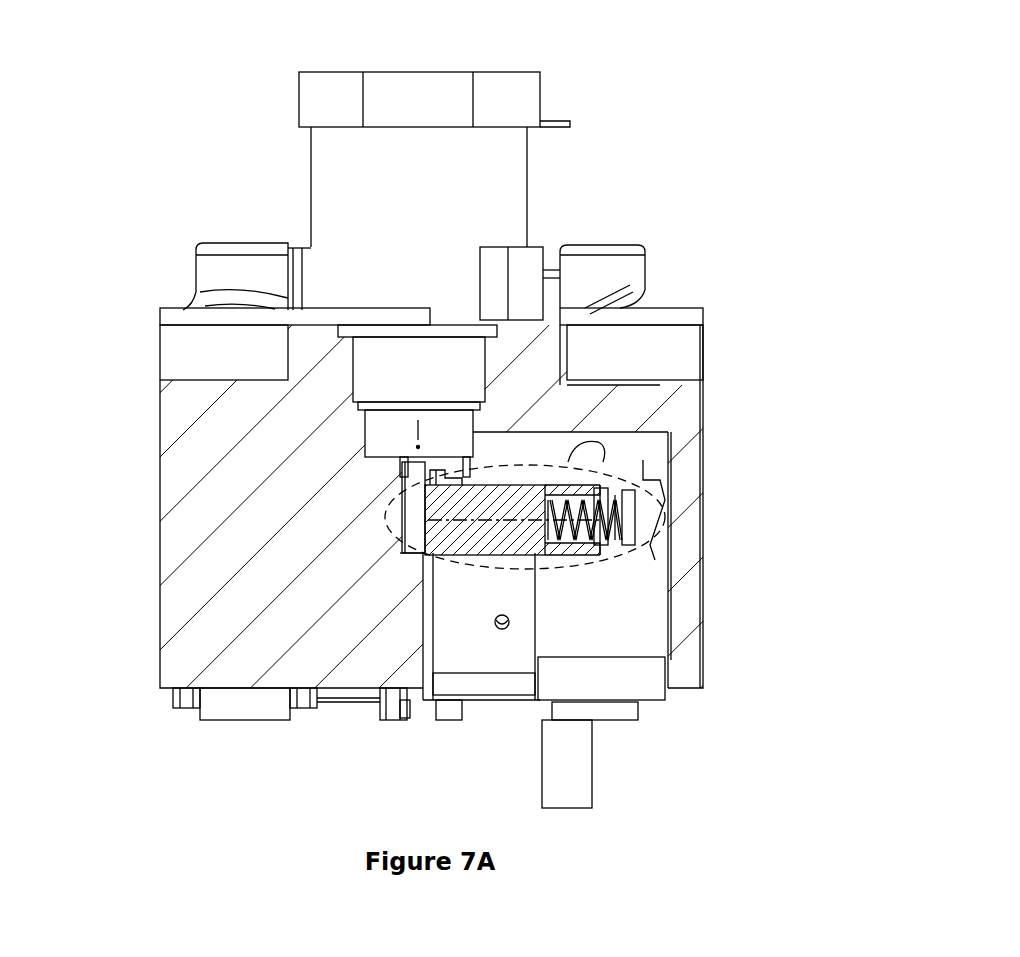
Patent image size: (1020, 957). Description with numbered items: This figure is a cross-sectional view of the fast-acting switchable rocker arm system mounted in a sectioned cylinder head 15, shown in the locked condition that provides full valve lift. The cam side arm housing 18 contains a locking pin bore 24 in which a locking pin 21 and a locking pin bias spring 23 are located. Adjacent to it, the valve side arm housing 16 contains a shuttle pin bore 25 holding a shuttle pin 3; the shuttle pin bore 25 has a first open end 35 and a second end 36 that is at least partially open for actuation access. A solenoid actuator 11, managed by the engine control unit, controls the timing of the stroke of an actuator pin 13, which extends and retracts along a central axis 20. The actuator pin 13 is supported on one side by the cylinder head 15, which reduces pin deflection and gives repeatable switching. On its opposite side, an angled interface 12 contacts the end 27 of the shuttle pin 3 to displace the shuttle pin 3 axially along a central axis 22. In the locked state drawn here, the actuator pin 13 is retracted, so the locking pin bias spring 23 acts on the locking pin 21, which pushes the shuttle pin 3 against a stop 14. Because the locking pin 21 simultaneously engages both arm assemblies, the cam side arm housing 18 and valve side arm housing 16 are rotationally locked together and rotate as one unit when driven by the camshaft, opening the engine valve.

The actuator 11 is at (418, 98).
The second end 36 is at (440, 483).
The central axis 20 is at (417, 443).
The cylinder head 15 is at (183, 470).
The actuator pin 13 is at (403, 475).
The angled interface 12 is at (405, 483).
The end of the shuttle pin 27 is at (418, 540).
The stop 14 is at (433, 560).
The shuttle pin 3 is at (428, 555).
The valve side arm housing 16 is at (487, 650).
The central axis 22 is at (530, 553).
The locking pin 21 is at (575, 553).
The cam side arm housing 18 is at (632, 602).
The locking pin bias spring 23 is at (615, 488).
The locking pin bore 24 is at (583, 483).
The first open end 35 is at (510, 483).
The shuttle pin bore 25 is at (483, 470).